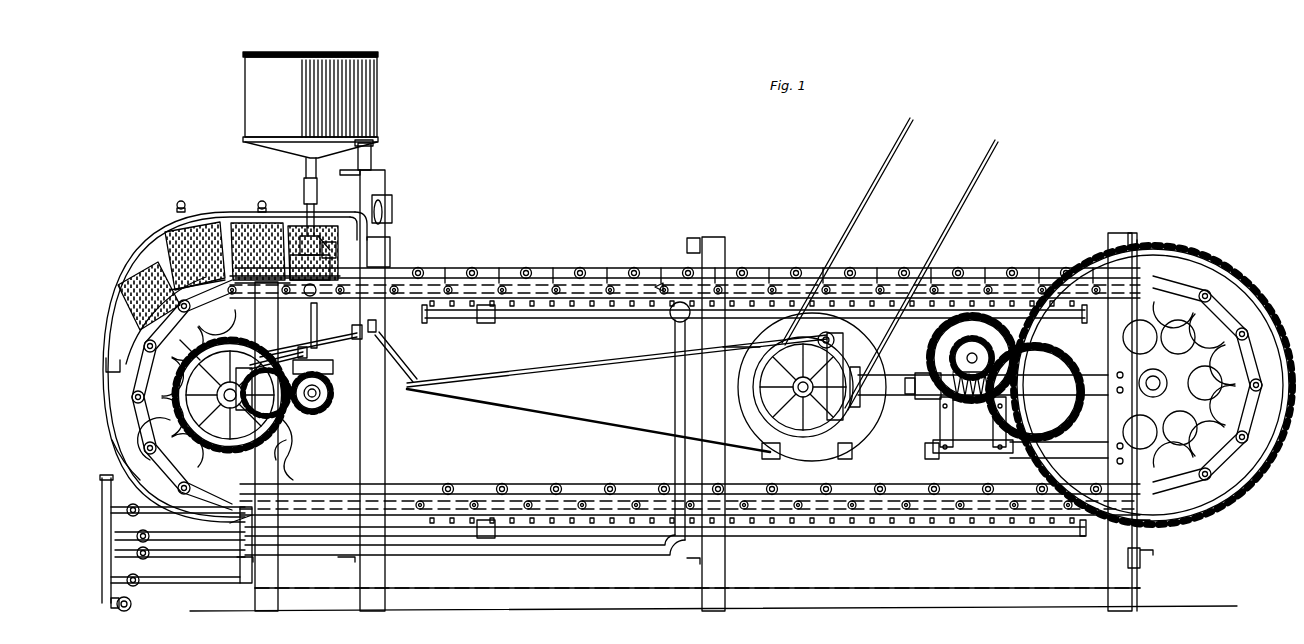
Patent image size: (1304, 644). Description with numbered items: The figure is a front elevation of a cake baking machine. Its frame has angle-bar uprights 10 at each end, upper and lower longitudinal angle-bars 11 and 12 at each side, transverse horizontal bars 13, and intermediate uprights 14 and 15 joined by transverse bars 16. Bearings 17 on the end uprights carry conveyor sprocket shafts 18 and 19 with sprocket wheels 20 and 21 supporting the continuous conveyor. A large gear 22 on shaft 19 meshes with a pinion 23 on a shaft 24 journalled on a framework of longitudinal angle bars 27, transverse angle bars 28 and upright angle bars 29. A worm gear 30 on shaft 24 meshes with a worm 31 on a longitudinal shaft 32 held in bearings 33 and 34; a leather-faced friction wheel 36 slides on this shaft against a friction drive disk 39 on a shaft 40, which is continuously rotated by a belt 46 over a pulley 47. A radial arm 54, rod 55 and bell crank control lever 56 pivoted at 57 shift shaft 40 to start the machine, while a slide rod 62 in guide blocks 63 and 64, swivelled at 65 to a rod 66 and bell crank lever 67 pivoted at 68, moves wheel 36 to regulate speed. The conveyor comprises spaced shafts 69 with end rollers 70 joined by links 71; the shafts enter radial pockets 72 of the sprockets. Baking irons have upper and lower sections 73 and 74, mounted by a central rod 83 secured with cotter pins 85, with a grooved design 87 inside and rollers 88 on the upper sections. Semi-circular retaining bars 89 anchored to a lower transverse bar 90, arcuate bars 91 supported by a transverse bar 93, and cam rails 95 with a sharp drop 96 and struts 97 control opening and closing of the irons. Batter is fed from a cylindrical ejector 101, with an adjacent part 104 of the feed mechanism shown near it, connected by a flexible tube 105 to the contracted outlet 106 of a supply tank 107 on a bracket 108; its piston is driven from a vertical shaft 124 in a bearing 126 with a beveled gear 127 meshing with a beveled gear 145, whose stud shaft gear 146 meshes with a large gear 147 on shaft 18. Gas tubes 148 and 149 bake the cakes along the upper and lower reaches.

The angle-bar uprights 10 is at (280, 572).
The upper longitudinal angle-bars 11 is at (672, 371).
The lower longitudinal angle-bars 12 is at (835, 520).
The transverse horizontal bars 13 is at (1140, 240).
The intermediate upright 14 is at (386, 572).
The intermediate upright 15 is at (726, 572).
The transverse bars 16 is at (372, 162).
The bearings 17 is at (240, 430).
The conveyor sprocket shaft 18 is at (232, 380).
The conveyor sprocket shaft 19 is at (1160, 382).
The sprocket wheels 20 is at (295, 445).
The sprocket wheels 21 is at (1192, 385).
The large gear 22 is at (1240, 278).
The pinion 23 is at (935, 338).
The shaft 24 is at (950, 352).
The longitudinal angle bars 27 is at (1040, 380).
The transverse angle bars 28 is at (930, 414).
The upright angle bars 29 is at (992, 422).
The worm gear 30 is at (975, 340).
The worm 31 is at (918, 372).
The longitudinal shaft 32 is at (908, 377).
The bearing 33 is at (938, 420).
The bearing 34 is at (1035, 392).
The friction wheel 36 is at (845, 345).
The friction drive disk 39 is at (780, 337).
The shaft 40 is at (760, 348).
The belt 46 is at (948, 233).
The pulley 47 is at (768, 418).
The radial arm 54 is at (834, 331).
The rod 55 is at (598, 366).
The bell crank control lever 56 is at (400, 355).
The pivot 57 is at (352, 340).
The slide rod 62 is at (246, 522).
The guide block 63 is at (852, 462).
The guide block 64 is at (930, 462).
The swivel connection 65 is at (770, 464).
The rod 66 is at (575, 419).
The bell crank lever 67 is at (376, 324).
The pivot 68 is at (362, 334).
The shafts 69 is at (664, 285).
The rollers 70 is at (660, 287).
The links 71 is at (498, 268).
The radial pockets 72 is at (190, 338).
The upper section 73 is at (428, 272).
The lower section 74 is at (448, 280).
The central mounting rod 83 is at (480, 490).
The cotter pins 85 is at (190, 367).
The grooved design 87 is at (258, 208).
The rollers 88 is at (185, 203).
The semi-circular retaining bars 89 is at (1258, 300).
The lower transverse bar 90 is at (1170, 525).
The arcuate bars 91 is at (176, 543).
The transverse bar 93 is at (119, 460).
The cam rails 95 is at (175, 225).
The sharp drop 96 is at (392, 248).
The struts 97 is at (118, 360).
The cylindrical batter ejector 101 is at (300, 236).
The lever 104 is at (322, 238).
The flexible tube 105 is at (304, 186).
The contracted outlet 106 is at (306, 166).
The batter supply tank 107 is at (378, 103).
The bracket 108 is at (392, 200).
The vertical shaft 124 is at (318, 320).
The bearing 126 is at (278, 358).
The beveled gear 127 is at (331, 367).
The beveled gear 145 is at (322, 410).
The gear 146 is at (286, 408).
The large gear 147 is at (190, 425).
The gas tube 148 is at (592, 318).
The gas tube 149 is at (580, 540).